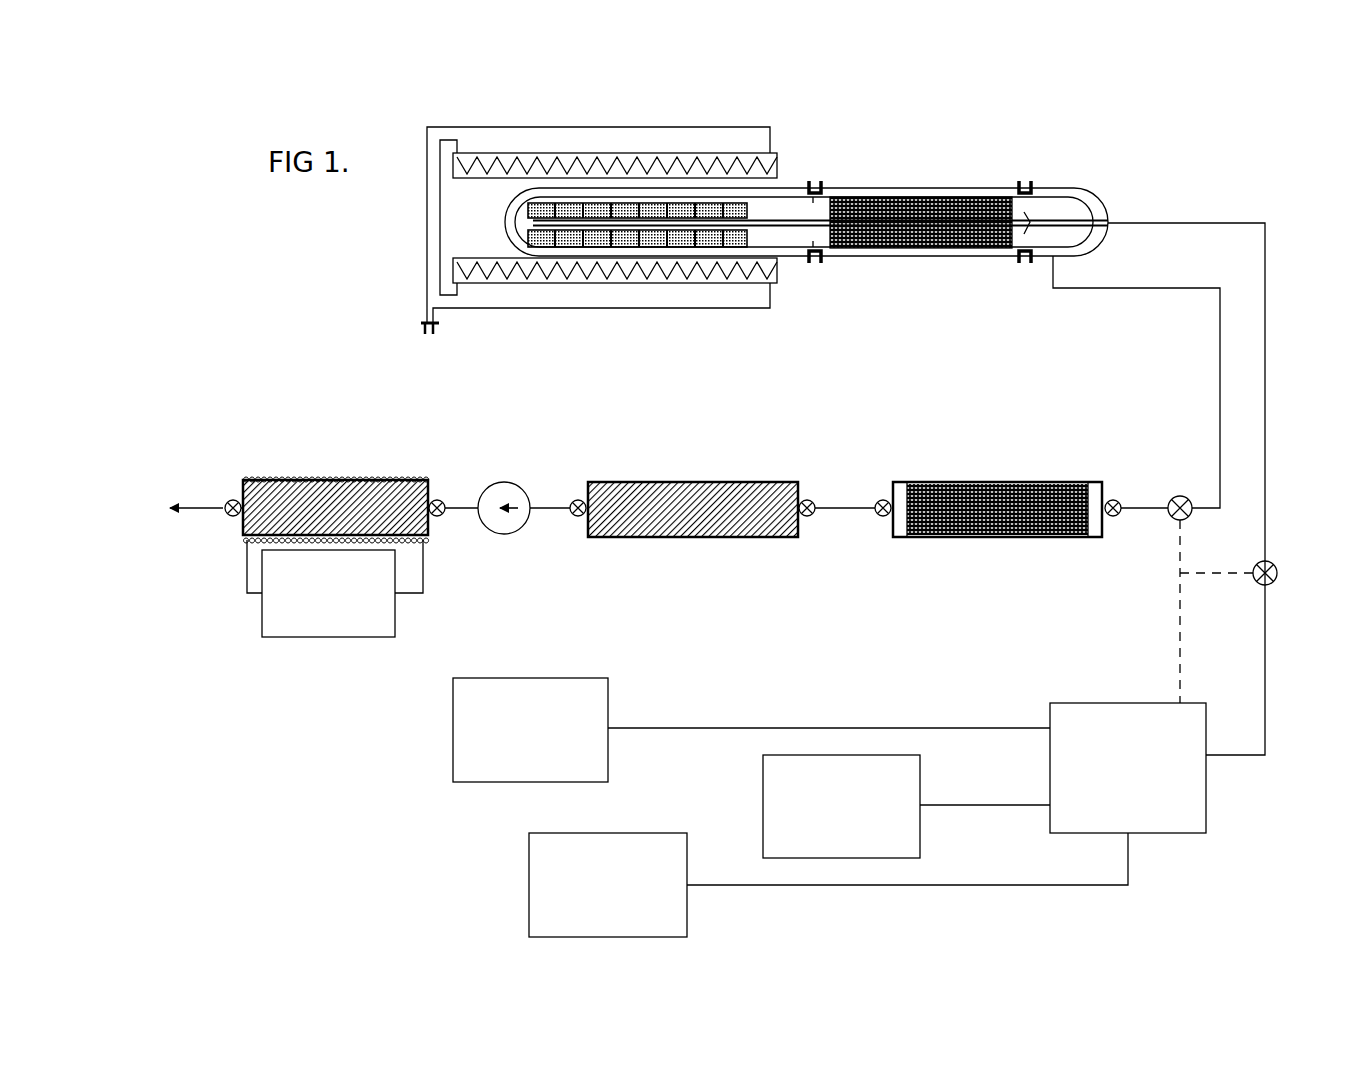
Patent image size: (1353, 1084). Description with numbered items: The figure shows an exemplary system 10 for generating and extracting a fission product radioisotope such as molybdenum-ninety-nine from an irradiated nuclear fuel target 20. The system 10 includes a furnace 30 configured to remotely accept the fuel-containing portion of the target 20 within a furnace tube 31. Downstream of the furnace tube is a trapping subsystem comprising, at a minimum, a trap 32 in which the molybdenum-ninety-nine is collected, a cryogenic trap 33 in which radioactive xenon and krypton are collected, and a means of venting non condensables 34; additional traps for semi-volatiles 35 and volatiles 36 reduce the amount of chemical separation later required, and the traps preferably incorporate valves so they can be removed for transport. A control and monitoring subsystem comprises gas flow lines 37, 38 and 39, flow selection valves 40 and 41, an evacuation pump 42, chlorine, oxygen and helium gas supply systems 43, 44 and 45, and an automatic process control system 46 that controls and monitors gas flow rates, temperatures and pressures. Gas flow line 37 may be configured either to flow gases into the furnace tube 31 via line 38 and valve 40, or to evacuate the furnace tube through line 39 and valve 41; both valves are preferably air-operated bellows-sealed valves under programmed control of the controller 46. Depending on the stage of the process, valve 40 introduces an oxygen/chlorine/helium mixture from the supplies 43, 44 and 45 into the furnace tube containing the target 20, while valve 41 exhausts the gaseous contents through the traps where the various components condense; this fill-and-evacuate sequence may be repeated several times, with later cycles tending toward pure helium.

The system 10 is at (333, 252).
The nuclear fuel target 20 is at (503, 207).
The furnace 30 is at (696, 127).
The furnace tube 31 is at (803, 188).
The trap 32 is at (985, 481).
The cryogenic trap 33 is at (408, 478).
The means of venting non condensables 34 is at (231, 498).
The semi-volatiles trap 35 is at (933, 197).
The volatiles trap 36 is at (667, 481).
The gas flow line 37 is at (1257, 757).
The gas flow line 38 is at (1203, 222).
The gas flow line 39 is at (1220, 342).
The flow selection valve 40 is at (1256, 564).
The flow selection valve 41 is at (1173, 498).
The evacuation pump 42 is at (505, 481).
The chlorine gas supply system 43 is at (595, 678).
The oxygen gas supply system 44 is at (922, 776).
The helium gas supply system 45 is at (653, 833).
The automatic process control system 46 is at (1132, 703).